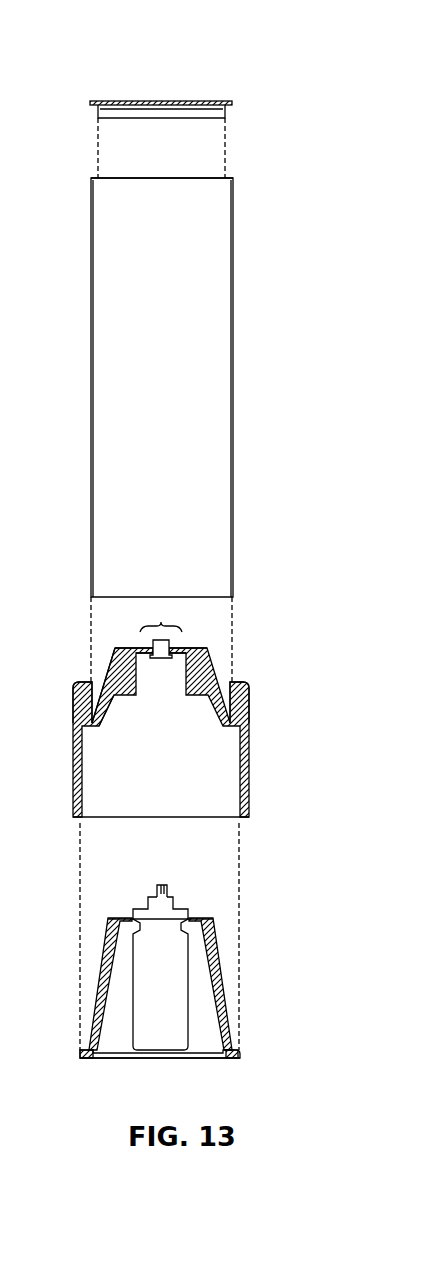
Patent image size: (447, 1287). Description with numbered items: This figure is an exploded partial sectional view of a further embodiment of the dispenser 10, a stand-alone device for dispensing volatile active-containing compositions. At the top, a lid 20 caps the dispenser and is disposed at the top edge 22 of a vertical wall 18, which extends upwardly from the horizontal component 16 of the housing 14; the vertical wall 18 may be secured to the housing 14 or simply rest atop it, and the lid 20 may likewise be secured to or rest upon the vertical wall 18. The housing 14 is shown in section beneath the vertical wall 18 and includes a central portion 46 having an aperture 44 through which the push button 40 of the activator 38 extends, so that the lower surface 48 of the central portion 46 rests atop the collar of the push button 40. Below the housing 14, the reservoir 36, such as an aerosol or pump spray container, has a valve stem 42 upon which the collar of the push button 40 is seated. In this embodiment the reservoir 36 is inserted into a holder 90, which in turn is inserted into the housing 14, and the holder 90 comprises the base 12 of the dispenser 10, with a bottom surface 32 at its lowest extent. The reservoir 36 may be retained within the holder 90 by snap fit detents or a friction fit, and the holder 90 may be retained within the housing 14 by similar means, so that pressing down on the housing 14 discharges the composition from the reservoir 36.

The dispenser 10 is at (109, 77).
The lid 20 is at (228, 103).
The top edge 22 is at (235, 178).
The vertical wall 18 is at (233, 435).
The housing 14 is at (250, 760).
The horizontal component 16 is at (243, 683).
The central portion 46 is at (130, 648).
The aperture 44 is at (146, 648).
The push button 40 is at (175, 645).
The lower surface 48 is at (152, 660).
The activator 38 is at (161, 614).
The reservoir 36 is at (207, 956).
The valve stem 42 is at (168, 892).
The holder 90 is at (223, 1012).
The base 12 is at (235, 1057).
The bottom surface 32 is at (90, 1060).